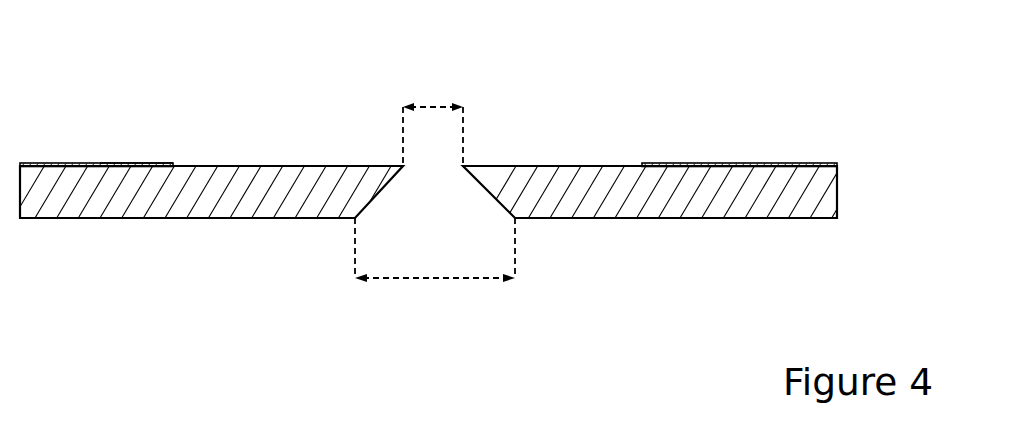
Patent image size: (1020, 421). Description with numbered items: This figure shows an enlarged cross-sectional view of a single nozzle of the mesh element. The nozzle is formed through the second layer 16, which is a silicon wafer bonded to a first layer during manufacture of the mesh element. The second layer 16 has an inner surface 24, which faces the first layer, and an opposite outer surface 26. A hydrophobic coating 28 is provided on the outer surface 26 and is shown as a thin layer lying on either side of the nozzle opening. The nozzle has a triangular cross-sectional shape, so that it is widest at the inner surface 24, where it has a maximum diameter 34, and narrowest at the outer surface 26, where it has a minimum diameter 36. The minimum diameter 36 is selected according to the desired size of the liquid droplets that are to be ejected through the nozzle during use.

The second layer 16 is at (777, 202).
The inner surface 24 is at (57, 220).
The outer surface 26 is at (60, 163).
The hydrophobic coating 28 is at (135, 156).
The maximum diameter 34 is at (425, 280).
The minimum diameter 36 is at (435, 105).